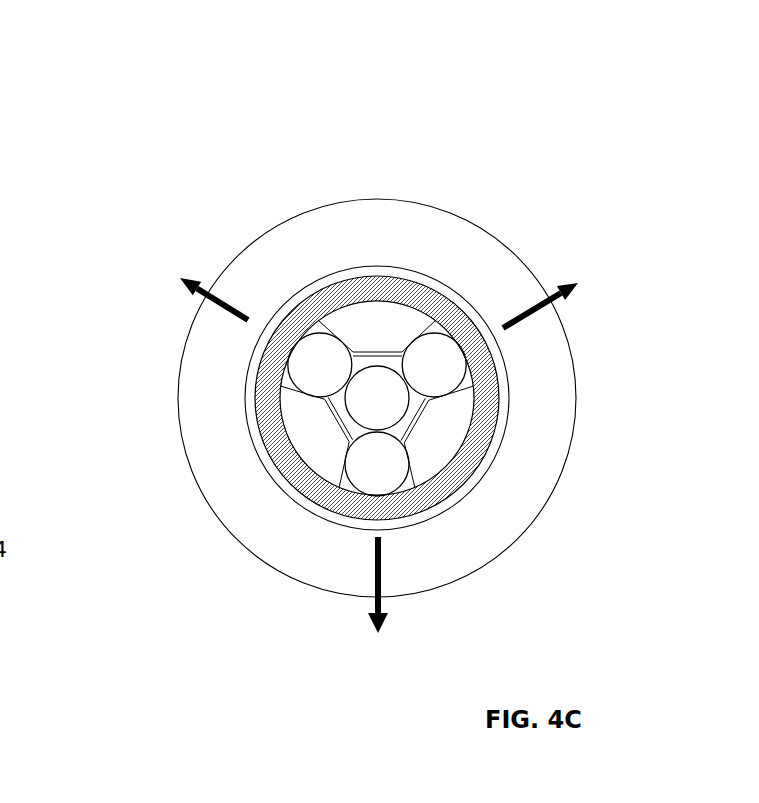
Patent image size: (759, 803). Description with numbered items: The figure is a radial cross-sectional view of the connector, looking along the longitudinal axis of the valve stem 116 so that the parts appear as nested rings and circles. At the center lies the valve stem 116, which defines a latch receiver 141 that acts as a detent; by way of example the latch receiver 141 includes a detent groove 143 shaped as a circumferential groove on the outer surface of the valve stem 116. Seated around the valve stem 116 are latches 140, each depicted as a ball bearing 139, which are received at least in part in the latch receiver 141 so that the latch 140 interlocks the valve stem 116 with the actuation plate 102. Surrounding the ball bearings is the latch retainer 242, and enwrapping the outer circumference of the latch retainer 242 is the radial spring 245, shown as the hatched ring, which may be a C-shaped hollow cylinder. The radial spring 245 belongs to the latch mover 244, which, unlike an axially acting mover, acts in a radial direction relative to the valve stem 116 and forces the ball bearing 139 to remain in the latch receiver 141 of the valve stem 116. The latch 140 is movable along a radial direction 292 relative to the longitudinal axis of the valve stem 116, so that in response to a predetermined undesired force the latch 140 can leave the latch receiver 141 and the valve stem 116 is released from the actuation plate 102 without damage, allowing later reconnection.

The actuation plate 102 is at (323, 215).
The valve stem 116 is at (415, 412).
The ball bearing 139 is at (323, 353).
The latch 140 is at (552, 566).
The latch receiver 141 is at (115, 283).
The detent groove 143 is at (378, 428).
The latch retainer 242 is at (400, 320).
The latch mover 244 is at (468, 102).
The radial spring 245 is at (372, 285).
The radial direction 292 is at (377, 570).